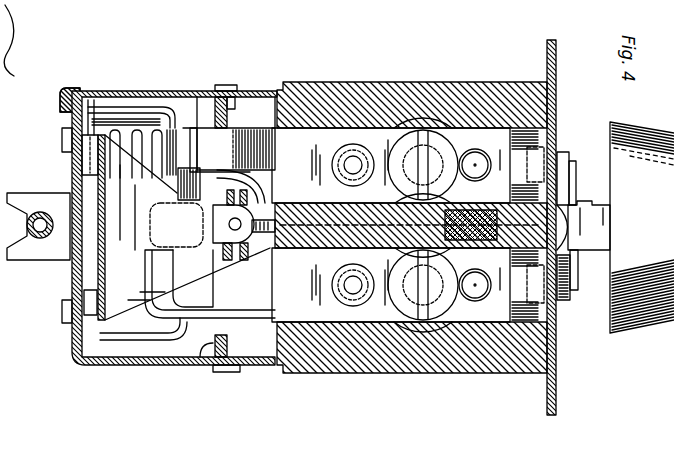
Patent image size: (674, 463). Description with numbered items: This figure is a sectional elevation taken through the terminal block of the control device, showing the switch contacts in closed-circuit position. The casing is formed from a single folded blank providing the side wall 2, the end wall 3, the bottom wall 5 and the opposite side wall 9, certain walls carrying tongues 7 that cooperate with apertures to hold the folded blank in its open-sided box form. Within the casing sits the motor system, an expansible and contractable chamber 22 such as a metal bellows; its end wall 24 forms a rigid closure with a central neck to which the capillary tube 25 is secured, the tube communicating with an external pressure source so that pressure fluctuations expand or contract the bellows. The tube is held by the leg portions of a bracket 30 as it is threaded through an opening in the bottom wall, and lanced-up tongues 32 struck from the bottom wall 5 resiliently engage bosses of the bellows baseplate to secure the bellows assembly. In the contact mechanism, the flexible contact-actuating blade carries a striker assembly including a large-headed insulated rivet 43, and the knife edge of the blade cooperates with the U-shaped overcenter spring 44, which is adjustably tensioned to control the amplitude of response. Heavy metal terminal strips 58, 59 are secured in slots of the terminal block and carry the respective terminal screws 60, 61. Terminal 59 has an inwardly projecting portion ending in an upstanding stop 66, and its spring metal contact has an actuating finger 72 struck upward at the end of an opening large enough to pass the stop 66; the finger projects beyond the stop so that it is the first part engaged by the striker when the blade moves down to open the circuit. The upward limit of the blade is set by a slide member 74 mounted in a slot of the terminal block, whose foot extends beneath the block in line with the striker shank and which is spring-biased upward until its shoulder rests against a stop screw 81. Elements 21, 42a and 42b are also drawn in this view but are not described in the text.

The side wall 2 is at (247, 366).
The end wall 3 is at (193, 108).
The bottom wall 5 is at (75, 180).
The tongue 7 is at (64, 140).
The opposite side wall 9 is at (259, 110).
The mounting flange 21 is at (554, 335).
The expansible and contractable chamber 22 is at (152, 124).
The end wall 24 is at (125, 108).
The tube 25 is at (38, 212).
The bracket 30 is at (20, 256).
The lanced-up tongue 32 is at (83, 95).
The terminal 42a is at (228, 96).
The terminal 42b is at (203, 345).
The large-headed rivet 43 is at (210, 254).
The overcenter spring 44 is at (118, 290).
The terminal strip 58 is at (391, 165).
The terminal strip 59 is at (391, 285).
The terminal screw 60 is at (408, 148).
The terminal screw 61 is at (443, 305).
The upstanding stop 66 is at (177, 227).
The actuating finger 72 is at (170, 187).
The slide member 74 is at (387, 352).
The stop screw 81 is at (497, 358).